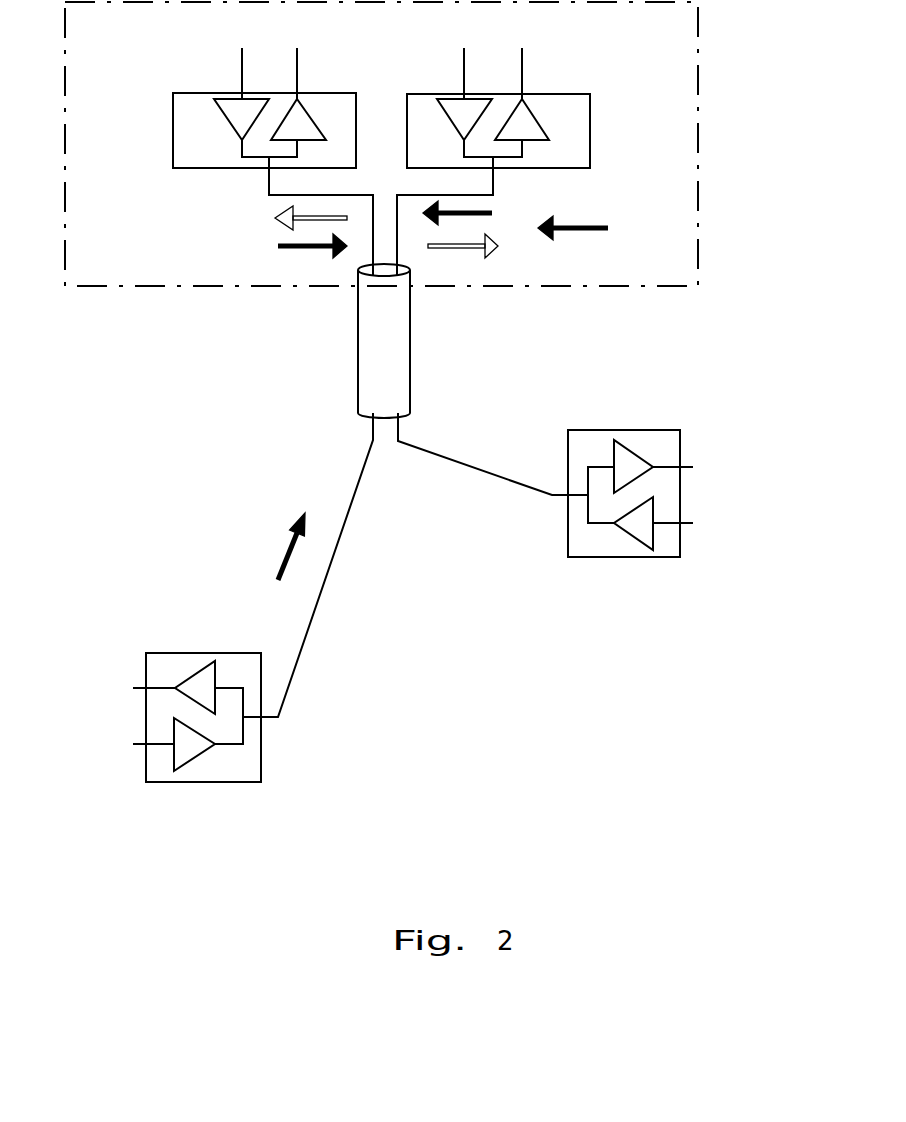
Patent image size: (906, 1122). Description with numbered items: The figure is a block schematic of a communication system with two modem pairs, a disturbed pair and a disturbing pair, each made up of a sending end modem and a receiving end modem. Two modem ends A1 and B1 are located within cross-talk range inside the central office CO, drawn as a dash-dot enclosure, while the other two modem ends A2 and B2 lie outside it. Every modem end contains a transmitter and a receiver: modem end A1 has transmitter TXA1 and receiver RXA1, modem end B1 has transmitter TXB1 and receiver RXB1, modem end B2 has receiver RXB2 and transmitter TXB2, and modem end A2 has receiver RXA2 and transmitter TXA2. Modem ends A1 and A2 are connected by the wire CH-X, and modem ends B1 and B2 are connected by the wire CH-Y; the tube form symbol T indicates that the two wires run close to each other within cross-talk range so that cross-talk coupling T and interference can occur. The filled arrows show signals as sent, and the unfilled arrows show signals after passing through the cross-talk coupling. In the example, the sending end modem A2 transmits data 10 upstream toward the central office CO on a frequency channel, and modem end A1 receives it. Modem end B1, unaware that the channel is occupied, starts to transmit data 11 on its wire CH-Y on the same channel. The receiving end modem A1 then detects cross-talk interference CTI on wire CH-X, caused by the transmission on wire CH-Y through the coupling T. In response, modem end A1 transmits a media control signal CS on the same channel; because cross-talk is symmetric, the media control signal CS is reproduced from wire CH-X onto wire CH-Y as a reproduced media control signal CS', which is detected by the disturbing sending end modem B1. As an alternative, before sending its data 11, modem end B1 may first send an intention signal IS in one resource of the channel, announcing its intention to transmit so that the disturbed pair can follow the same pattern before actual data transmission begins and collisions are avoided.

The central office CO is at (698, 140).
The modem end A1 is at (273, 184).
The transmitter TXA1 is at (232, 105).
The receiver RXA1 is at (300, 117).
The modem end B1 is at (493, 184).
The transmitter TXB1 is at (450, 110).
The receiver RXB1 is at (523, 117).
The cross-talk interference CTI is at (280, 222).
The media control signal CS is at (268, 255).
The data 11 is at (495, 212).
The intention signal IS is at (610, 225).
The reproduced media control signal CS' is at (499, 259).
The cross-talk coupling T is at (358, 320).
The wire CH-Y is at (423, 453).
The wire CH-X is at (328, 575).
The data 10 is at (288, 553).
The modem end B2 is at (624, 478).
The receiver RXB2 is at (630, 462).
The transmitter TXB2 is at (647, 530).
The modem end A2 is at (203, 702).
The receiver RXA2 is at (193, 682).
The transmitter TXA2 is at (183, 752).